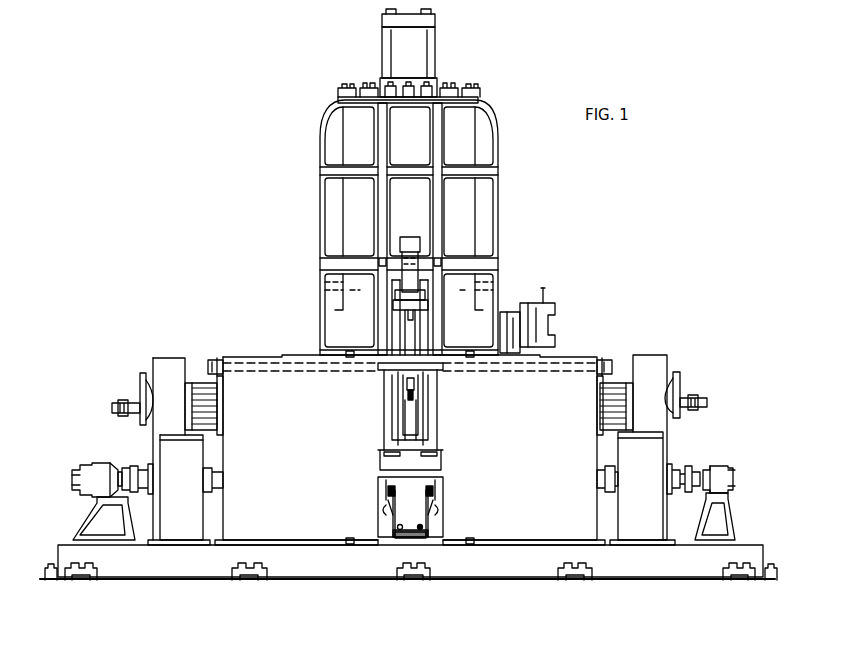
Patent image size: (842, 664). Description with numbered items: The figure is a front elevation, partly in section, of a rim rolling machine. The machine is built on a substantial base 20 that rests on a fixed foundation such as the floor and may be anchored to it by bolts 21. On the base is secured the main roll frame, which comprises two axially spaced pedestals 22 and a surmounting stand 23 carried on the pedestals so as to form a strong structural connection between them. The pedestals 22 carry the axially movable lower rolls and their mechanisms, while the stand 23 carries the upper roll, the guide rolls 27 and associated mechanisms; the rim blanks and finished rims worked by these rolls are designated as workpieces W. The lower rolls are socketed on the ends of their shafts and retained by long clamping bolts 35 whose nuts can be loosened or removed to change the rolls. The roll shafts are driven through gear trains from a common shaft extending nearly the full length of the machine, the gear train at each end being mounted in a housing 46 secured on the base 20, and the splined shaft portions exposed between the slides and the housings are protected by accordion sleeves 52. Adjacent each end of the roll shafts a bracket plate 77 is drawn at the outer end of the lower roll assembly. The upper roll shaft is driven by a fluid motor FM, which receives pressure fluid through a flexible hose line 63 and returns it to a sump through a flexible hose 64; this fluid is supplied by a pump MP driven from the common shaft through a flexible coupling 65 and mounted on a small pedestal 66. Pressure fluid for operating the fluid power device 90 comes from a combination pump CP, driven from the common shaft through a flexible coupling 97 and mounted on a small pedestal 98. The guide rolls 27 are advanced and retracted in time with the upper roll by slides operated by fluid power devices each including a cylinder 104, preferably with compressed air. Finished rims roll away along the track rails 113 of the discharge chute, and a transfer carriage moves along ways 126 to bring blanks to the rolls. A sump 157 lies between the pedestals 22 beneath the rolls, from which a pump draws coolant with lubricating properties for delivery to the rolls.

The base 20 is at (485, 578).
The bolts 21 is at (262, 563).
The pedestals 22 is at (300, 480).
The stand 23 is at (483, 220).
The guide rolls 27 is at (419, 409).
The workpieces W is at (420, 432).
The clamping bolts 35 is at (112, 406).
The housing 46 is at (160, 462).
The accordion sleeves 52 is at (205, 382).
The flexible hose line 63 is at (544, 296).
The flexible hose 64 is at (522, 346).
The flexible coupling 65 is at (687, 488).
The pedestal 66 is at (733, 521).
The bracket plate 77 is at (140, 386).
The fluid power device 90 is at (417, 50).
The flexible coupling 97 is at (140, 490).
The pedestal 98 is at (97, 521).
The cylinder 104 is at (420, 262).
The track rails 113 is at (410, 462).
The ways 126 is at (430, 492).
The sump 157 is at (400, 542).
The combination pump CP is at (90, 467).
The pump MP is at (732, 470).
The fluid motor FM is at (530, 338).